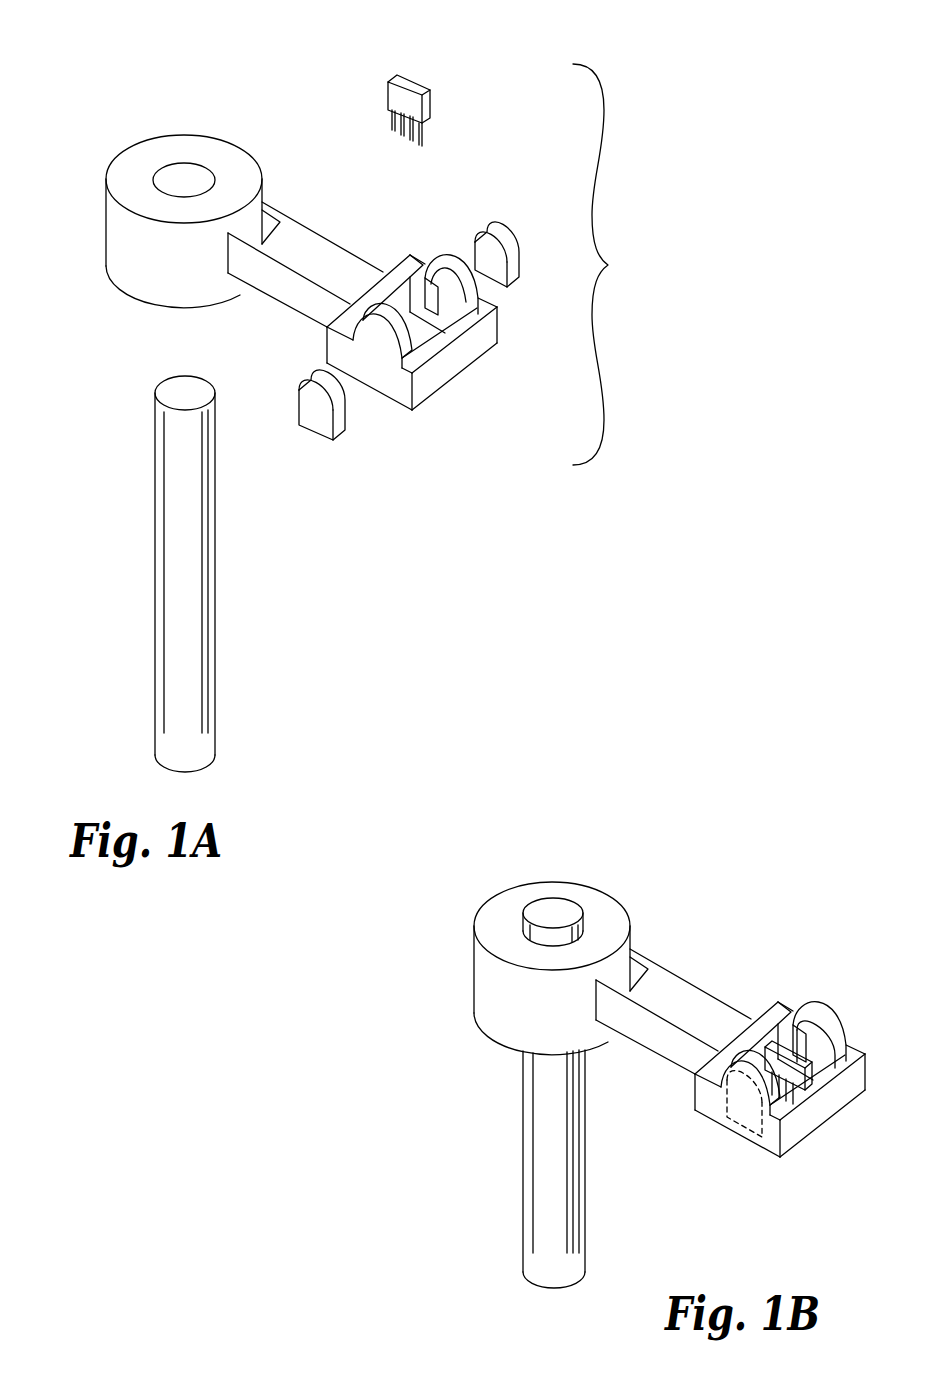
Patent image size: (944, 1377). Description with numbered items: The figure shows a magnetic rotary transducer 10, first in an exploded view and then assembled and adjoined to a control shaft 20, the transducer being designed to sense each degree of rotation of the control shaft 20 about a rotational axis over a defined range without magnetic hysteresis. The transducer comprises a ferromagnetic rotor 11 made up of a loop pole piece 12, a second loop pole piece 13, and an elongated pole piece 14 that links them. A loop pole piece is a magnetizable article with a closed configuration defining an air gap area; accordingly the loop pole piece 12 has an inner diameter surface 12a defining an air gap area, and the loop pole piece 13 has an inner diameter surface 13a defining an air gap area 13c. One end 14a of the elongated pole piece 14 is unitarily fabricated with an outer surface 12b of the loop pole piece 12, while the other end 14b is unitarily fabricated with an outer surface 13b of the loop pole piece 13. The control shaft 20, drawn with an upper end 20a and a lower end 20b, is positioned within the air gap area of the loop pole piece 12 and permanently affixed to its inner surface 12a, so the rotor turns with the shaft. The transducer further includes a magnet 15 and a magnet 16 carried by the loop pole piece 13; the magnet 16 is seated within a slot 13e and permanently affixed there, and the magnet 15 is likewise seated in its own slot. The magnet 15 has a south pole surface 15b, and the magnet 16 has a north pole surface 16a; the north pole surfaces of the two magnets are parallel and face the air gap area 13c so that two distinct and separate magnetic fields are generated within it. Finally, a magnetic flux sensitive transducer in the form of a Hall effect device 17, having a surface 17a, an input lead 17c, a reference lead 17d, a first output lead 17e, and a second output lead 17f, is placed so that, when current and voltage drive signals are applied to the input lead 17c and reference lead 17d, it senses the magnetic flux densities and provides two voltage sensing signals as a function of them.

In FIG. 1A, the magnetic rotary transducer 10 is at (603, 264).
In FIG. 1B, the magnetic rotary transducer 10 is at (766, 855).
In FIG. 1A, the ferromagnetic rotor 11 is at (140, 330).
In FIG. 1B, the ferromagnetic rotor 11 is at (678, 942).
In FIG. 1A, the loop pole piece 12 is at (156, 184).
In FIG. 1B, the loop pole piece 12 is at (509, 947).
In FIG. 1A, the inner diameter surface 12a is at (185, 175).
In FIG. 1A, the outer surface 12b is at (120, 234).
In FIG. 1B, the outer surface 12b is at (439, 967).
In FIG. 1A, the loop pole piece 13 is at (426, 356).
In FIG. 1B, the loop pole piece 13 is at (794, 1105).
In FIG. 1A, the inner diameter surface 13a is at (432, 261).
In FIG. 1B, the inner diameter surface 13a is at (835, 1062).
In FIG. 1A, the outer surface 13b is at (385, 382).
In FIG. 1B, the outer surface 13b is at (789, 1150).
In FIG. 1A, the air gap area 13c is at (445, 338).
In FIG. 1B, the air gap area 13c is at (774, 1129).
In FIG. 1A, the slot 13e is at (440, 280).
In FIG. 1A, the elongated pole piece 14 is at (300, 256).
In FIG. 1B, the elongated pole piece 14 is at (680, 967).
In FIG. 1A, the end 14a is at (232, 240).
In FIG. 1B, the end 14a is at (623, 925).
In FIG. 1A, the end 14b is at (355, 290).
In FIG. 1B, the end 14b is at (697, 980).
In FIG. 1A, the magnet 15 is at (298, 449).
In FIG. 1B, the magnet 15 is at (718, 1150).
In FIG. 1A, the south pole surface 15b is at (315, 408).
In FIG. 1B, the south pole surface 15b is at (727, 1100).
In FIG. 1A, the magnet 16 is at (530, 233).
In FIG. 1B, the magnet 16 is at (807, 1005).
In FIG. 1A, the north pole surface 16a is at (510, 258).
In FIG. 1B, the north pole surface 16a is at (805, 1012).
In FIG. 1A, the Hall effect device 17 is at (377, 100).
In FIG. 1B, the Hall effect device 17 is at (742, 1062).
In FIG. 1A, the surface 17a is at (387, 88).
In FIG. 1A, the input lead 17c is at (393, 118).
In FIG. 1A, the reference lead 17d is at (402, 128).
In FIG. 1A, the first output lead 17e is at (412, 142).
In FIG. 1A, the second output lead 17f is at (424, 148).
In FIG. 1A, the control shaft 20 is at (193, 574).
In FIG. 1B, the control shaft 20 is at (569, 1049).
In FIG. 1A, the upper end of rod 20a is at (172, 400).
In FIG. 1B, the upper end of rod 20a is at (548, 910).
In FIG. 1A, the lower end of rod 20b is at (165, 742).
In FIG. 1B, the lower end of rod 20b is at (535, 1272).